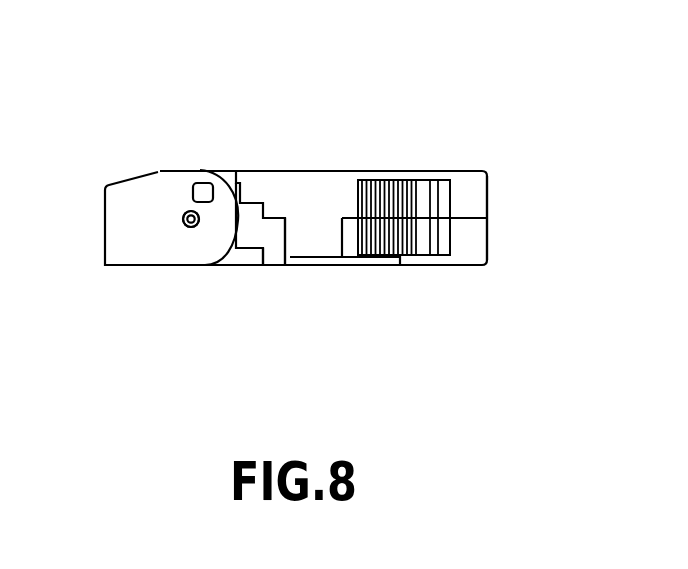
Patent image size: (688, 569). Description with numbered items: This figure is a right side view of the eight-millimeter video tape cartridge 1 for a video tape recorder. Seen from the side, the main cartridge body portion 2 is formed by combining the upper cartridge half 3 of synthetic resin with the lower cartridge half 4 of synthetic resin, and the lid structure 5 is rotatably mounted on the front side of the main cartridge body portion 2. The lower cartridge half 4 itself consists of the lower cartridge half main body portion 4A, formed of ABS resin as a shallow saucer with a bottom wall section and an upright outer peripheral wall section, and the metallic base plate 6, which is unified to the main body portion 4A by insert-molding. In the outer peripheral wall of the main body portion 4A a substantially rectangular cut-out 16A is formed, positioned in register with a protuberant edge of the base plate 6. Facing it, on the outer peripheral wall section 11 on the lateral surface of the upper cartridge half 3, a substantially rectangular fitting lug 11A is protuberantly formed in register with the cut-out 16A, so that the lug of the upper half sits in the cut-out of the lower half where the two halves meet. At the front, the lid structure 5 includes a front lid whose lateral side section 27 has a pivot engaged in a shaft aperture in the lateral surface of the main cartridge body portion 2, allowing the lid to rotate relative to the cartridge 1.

The tape cartridge 1 is at (196, 101).
The main cartridge body portion 2 is at (465, 83).
The upper cartridge half 3 is at (312, 173).
The lower cartridge half 4 is at (412, 232).
The lower cartridge half main body portion 4A is at (455, 265).
The lid structure 5 is at (102, 205).
The base plate 6 is at (320, 265).
The outer peripheral wall section 11 is at (275, 250).
The fitting lug 11A is at (310, 238).
The cut-out 16A is at (337, 237).
The lateral side section 27 is at (177, 253).